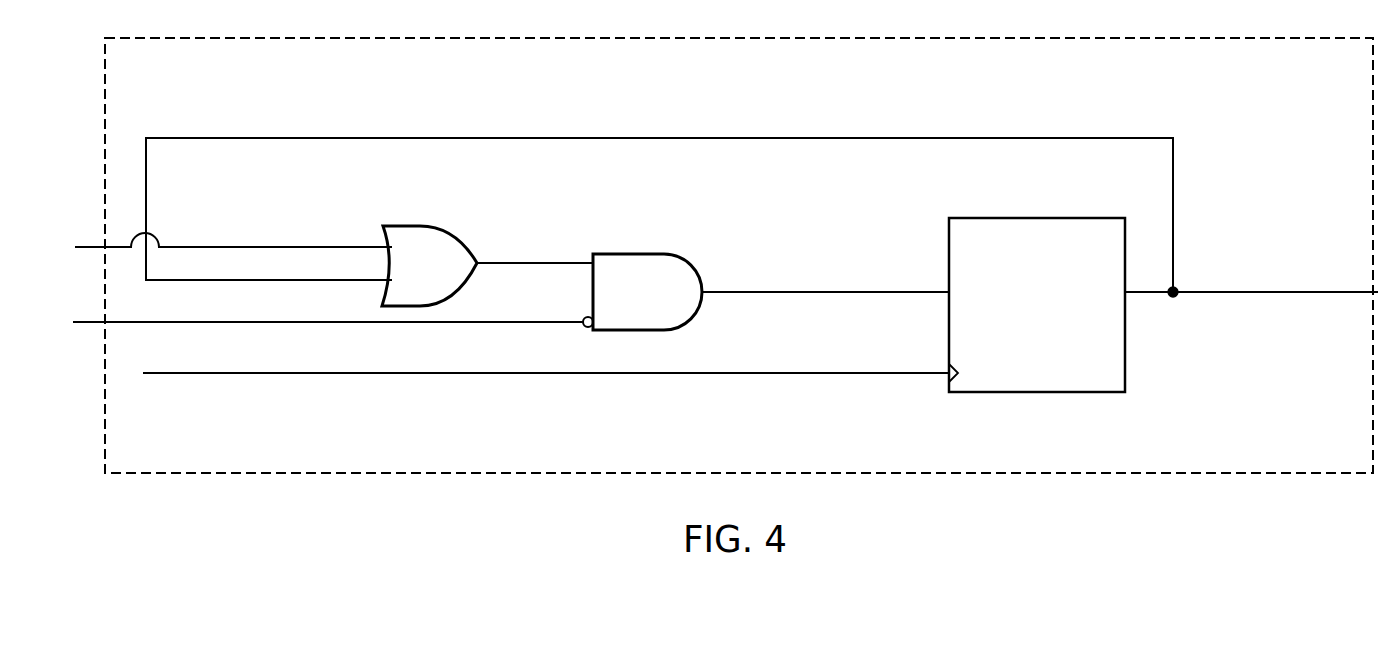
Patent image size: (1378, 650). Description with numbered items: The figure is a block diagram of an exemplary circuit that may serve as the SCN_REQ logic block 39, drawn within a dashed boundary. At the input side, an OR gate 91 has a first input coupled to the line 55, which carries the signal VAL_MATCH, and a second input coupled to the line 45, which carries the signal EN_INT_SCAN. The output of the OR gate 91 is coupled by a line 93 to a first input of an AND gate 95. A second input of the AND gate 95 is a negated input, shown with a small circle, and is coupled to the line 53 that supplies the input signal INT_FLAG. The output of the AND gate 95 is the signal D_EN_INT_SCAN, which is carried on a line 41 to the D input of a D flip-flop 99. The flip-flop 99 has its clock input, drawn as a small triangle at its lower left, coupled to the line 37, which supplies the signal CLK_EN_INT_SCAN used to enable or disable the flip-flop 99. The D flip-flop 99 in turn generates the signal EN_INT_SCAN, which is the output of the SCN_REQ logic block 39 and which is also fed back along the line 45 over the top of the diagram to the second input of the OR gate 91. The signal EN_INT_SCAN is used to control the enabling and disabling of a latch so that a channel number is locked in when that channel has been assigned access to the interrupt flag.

The SCN_REQ logic block 39 is at (1100, 38).
The line 45 is at (197, 137).
The line 55 is at (174, 241).
The OR gate 91 is at (430, 226).
The line 93 is at (493, 262).
The AND gate 95 is at (610, 253).
The line 53 is at (498, 323).
The line 37 is at (485, 375).
The D_EN_INT_SCAN signal line 41 is at (791, 296).
The D flip-flop 99 is at (1088, 218).